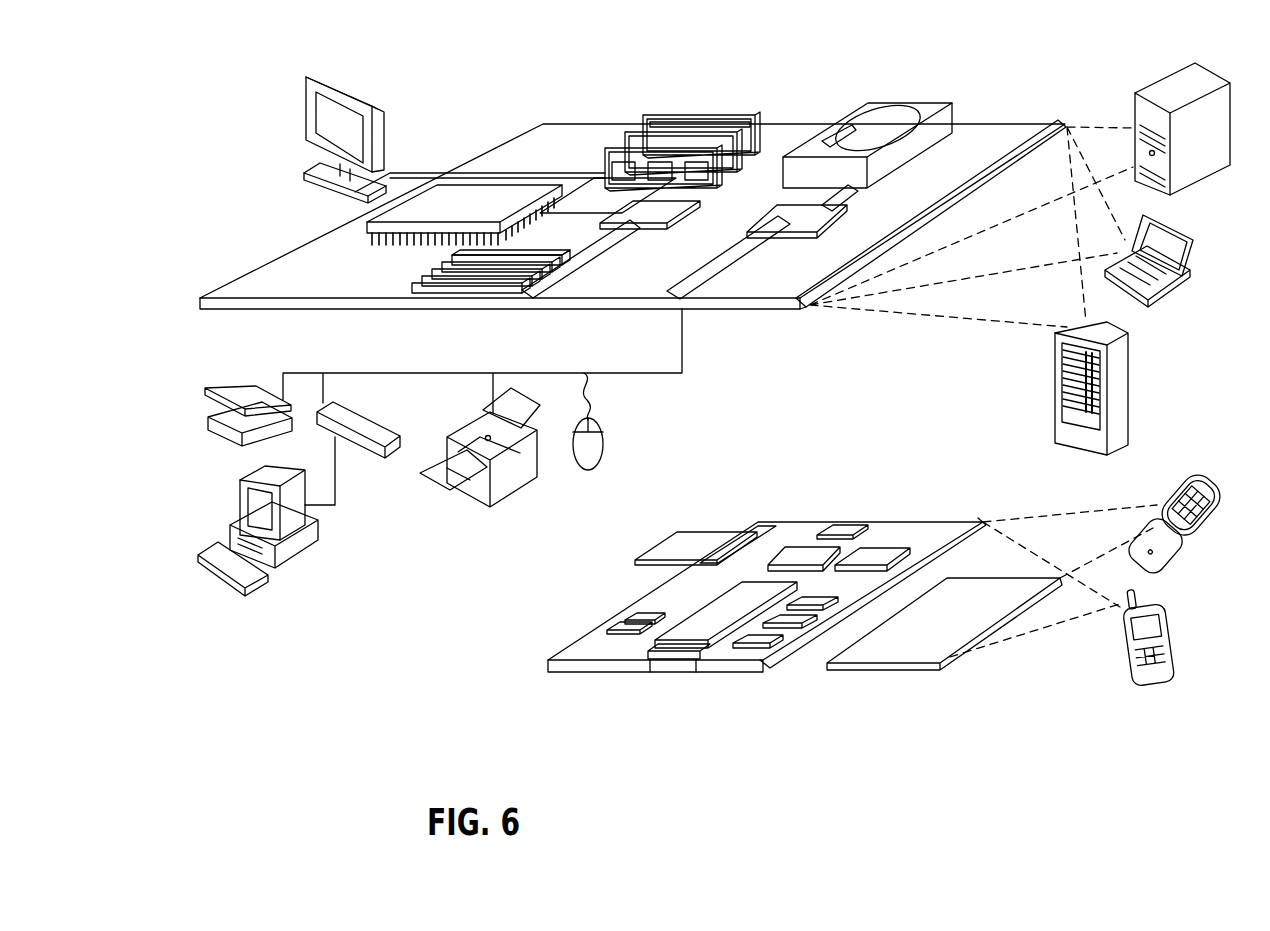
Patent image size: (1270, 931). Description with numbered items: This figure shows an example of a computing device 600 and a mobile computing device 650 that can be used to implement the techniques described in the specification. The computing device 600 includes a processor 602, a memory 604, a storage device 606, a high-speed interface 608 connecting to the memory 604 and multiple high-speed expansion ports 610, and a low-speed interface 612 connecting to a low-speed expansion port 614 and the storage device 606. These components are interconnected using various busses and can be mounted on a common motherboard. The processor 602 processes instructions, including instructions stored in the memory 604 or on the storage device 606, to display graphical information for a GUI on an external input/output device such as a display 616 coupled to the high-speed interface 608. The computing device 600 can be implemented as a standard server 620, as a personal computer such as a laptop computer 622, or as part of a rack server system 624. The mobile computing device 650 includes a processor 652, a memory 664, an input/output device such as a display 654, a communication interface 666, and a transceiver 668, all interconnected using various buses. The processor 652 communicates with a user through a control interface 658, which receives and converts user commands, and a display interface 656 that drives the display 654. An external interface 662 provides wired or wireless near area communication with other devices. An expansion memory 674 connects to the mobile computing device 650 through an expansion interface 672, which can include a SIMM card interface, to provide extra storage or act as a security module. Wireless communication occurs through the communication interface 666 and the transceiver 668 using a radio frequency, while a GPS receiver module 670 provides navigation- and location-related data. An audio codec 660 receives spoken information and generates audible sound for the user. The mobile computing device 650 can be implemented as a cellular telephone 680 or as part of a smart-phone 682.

The computing device 600 is at (488, 87).
The processor 602 is at (362, 226).
The memory 604 is at (656, 116).
The storage device 606 is at (854, 115).
The high-speed interface 608 is at (576, 178).
The high-speed expansion ports 610 is at (414, 270).
The low-speed interface 612 is at (774, 217).
The low-speed expansion port 614 is at (712, 308).
The display 616 is at (318, 74).
The standard server 620 is at (1136, 120).
The laptop computer 622 is at (1192, 242).
The rack server system 624 is at (1056, 407).
The mobile computing device 650 is at (522, 672).
The processor 652 is at (700, 640).
The display 654 is at (907, 650).
The display interface 656 is at (770, 648).
The control interface 658 is at (797, 628).
The audio codec 660 is at (812, 610).
The external interface 662 is at (675, 660).
The memory 664 is at (628, 621).
The communication interface 666 is at (795, 550).
The transceiver 668 is at (880, 550).
The GPS receiver module 670 is at (848, 530).
The expansion interface 672 is at (747, 536).
The expansion memory 674 is at (680, 534).
The cellular telephone 680 is at (1166, 491).
The smart-phone 682 is at (1125, 640).